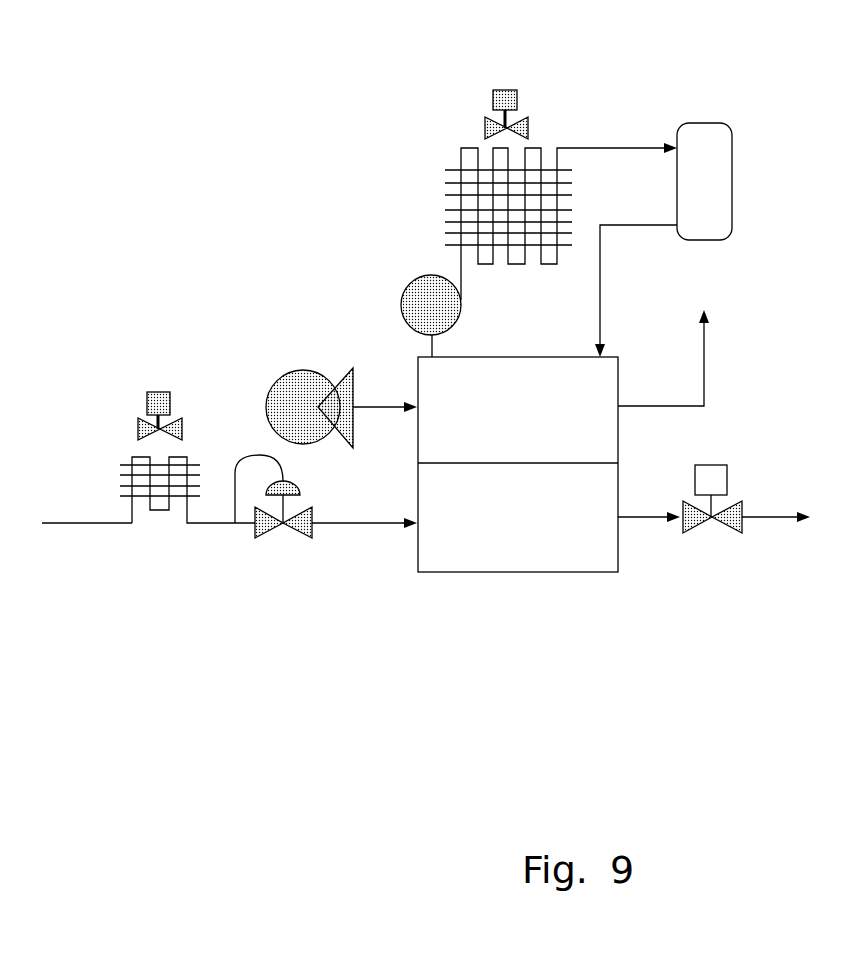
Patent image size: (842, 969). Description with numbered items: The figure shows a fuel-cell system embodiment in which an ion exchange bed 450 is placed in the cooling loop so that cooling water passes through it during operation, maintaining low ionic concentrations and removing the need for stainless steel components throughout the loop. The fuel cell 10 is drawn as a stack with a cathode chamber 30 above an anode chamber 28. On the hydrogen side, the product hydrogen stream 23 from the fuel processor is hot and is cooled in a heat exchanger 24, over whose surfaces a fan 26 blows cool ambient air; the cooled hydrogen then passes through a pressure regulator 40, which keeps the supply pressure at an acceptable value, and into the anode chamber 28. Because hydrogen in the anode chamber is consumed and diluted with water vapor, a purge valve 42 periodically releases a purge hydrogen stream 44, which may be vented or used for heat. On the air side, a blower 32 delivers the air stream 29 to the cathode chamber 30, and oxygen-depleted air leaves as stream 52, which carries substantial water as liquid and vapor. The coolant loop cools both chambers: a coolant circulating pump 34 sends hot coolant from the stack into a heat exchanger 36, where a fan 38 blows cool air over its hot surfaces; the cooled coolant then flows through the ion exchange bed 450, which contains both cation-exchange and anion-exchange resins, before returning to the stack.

The fuel cell 10 is at (395, 556).
The product hydrogen stream 23 is at (72, 524).
The heat exchanger 24 is at (165, 511).
The fan 26 is at (170, 402).
The anode chamber 28 is at (573, 557).
The air stream 29 is at (382, 408).
The cathode chamber 30 is at (520, 368).
The blower 32 is at (315, 372).
The coolant circulating pump 34 is at (410, 280).
The heat exchanger 36 is at (558, 161).
The fan 38 is at (518, 100).
The pressure regulator 40 is at (255, 530).
The purge valve 42 is at (727, 472).
The purge hydrogen stream 44 is at (777, 514).
The stream 52 is at (703, 370).
The ion exchange bed 450 is at (732, 192).